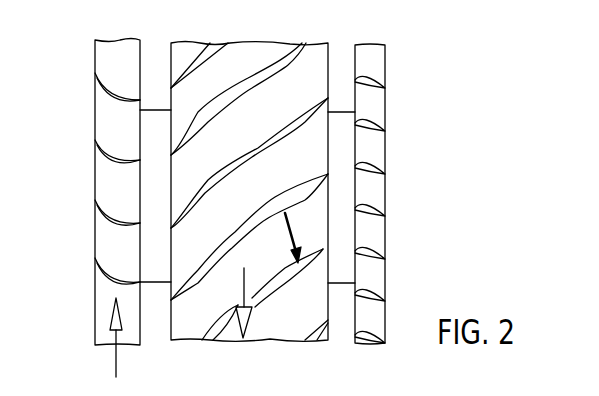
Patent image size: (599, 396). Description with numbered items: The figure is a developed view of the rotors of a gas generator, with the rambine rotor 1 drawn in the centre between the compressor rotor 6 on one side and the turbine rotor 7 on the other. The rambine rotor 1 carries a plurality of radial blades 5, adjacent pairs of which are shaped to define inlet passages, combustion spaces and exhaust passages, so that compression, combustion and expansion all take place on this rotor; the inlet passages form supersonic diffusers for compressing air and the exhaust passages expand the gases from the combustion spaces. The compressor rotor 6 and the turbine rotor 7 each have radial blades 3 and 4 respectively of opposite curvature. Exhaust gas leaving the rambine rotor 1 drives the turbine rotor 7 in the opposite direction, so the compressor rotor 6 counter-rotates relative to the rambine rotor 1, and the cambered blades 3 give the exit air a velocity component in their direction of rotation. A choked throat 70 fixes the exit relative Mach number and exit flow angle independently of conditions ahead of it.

The rambine rotor 1 is at (241, 65).
The radial blades of compressor rotor 3 is at (103, 148).
The radial blades of turbine rotor 4 is at (386, 75).
The radial blades 5 is at (305, 105).
The compressor rotor 6 is at (112, 68).
The turbine rotor 7 is at (378, 62).
The choked throat 70 is at (293, 242).